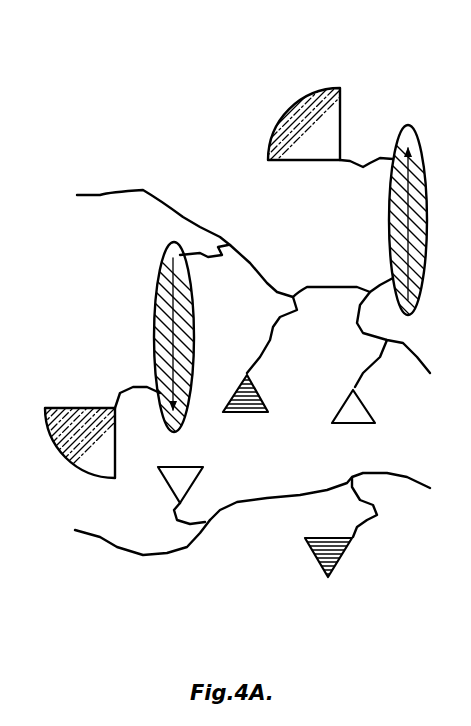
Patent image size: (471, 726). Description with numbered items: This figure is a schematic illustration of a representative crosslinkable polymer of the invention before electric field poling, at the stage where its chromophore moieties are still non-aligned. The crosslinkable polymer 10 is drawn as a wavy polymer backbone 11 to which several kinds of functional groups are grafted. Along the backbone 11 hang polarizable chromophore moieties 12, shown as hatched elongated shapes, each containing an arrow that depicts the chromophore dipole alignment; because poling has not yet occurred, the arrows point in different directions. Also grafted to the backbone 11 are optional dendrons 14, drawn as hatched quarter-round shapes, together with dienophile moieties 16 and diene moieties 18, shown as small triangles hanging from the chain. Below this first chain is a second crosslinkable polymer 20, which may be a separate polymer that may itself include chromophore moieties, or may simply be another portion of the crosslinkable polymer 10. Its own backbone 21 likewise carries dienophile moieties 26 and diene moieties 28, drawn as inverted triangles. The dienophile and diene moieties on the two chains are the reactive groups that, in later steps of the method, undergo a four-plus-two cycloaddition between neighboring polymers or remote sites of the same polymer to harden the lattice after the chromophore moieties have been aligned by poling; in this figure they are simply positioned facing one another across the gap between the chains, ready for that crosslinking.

The crosslinkable polymer 10 is at (113, 183).
The polymer backbone 11 is at (255, 263).
The polarizable chromophore moieties 12 is at (157, 300).
The dendrons 14 is at (308, 95).
The dienophile moieties 16 is at (243, 413).
The diene moieties 18 is at (352, 425).
The crosslinkable polymer 20 is at (138, 569).
The lower interface line 21 is at (237, 502).
The dienophile moieties 26 is at (315, 562).
The diene moieties 28 is at (163, 482).